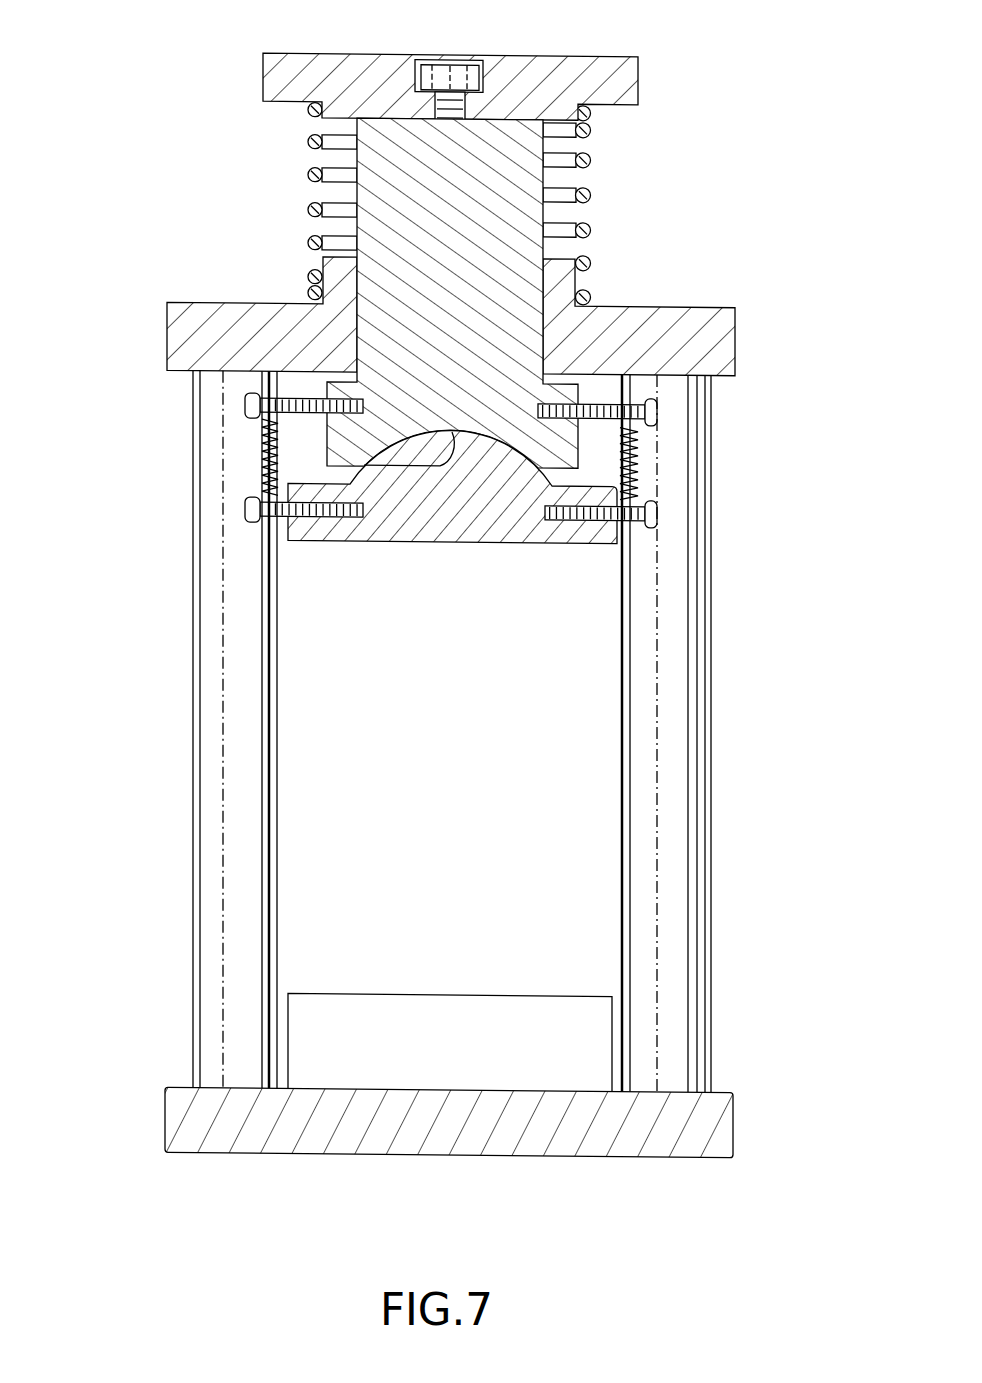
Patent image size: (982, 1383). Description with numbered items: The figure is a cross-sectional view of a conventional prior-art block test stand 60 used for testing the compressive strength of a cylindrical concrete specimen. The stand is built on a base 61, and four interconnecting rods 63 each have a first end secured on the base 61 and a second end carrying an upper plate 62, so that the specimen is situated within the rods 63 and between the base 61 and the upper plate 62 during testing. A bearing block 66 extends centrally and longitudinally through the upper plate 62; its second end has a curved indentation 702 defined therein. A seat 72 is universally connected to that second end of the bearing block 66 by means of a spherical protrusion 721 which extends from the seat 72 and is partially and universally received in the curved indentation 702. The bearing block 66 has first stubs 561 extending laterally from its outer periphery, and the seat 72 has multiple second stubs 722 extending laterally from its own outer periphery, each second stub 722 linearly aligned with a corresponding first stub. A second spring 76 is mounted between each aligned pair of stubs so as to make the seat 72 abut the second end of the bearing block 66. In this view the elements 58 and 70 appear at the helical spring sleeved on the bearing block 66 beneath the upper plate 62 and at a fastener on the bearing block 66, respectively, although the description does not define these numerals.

The spring 58 is at (590, 157).
The block test stand 60 is at (160, 649).
The base 61 is at (455, 1123).
The upper plate 62 is at (567, 56).
The interconnecting rods 63 is at (672, 662).
The bearing block 66 is at (460, 296).
The screw 70 is at (260, 393).
The curved indentation 702 is at (360, 465).
The seat 72 is at (550, 468).
The spherical protrusion 721 is at (330, 476).
The second stubs 722 is at (628, 505).
The second spring 76 is at (361, 459).
The screw 561 is at (608, 402).